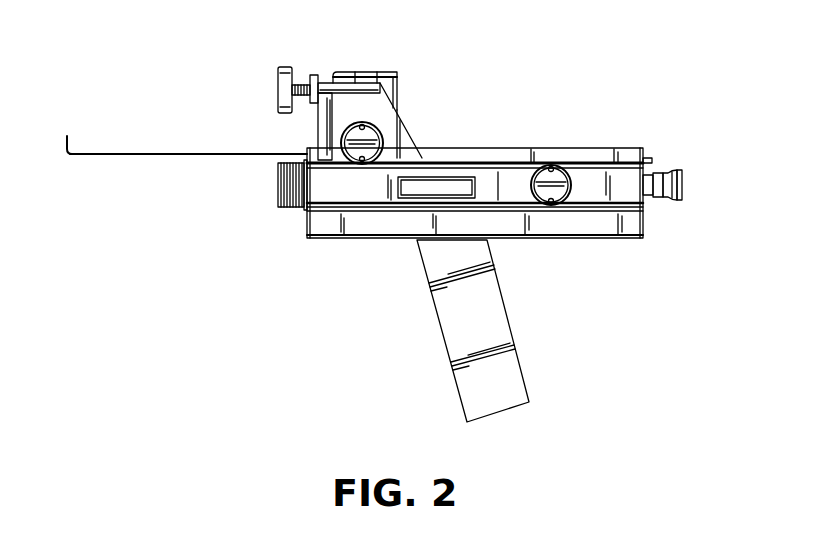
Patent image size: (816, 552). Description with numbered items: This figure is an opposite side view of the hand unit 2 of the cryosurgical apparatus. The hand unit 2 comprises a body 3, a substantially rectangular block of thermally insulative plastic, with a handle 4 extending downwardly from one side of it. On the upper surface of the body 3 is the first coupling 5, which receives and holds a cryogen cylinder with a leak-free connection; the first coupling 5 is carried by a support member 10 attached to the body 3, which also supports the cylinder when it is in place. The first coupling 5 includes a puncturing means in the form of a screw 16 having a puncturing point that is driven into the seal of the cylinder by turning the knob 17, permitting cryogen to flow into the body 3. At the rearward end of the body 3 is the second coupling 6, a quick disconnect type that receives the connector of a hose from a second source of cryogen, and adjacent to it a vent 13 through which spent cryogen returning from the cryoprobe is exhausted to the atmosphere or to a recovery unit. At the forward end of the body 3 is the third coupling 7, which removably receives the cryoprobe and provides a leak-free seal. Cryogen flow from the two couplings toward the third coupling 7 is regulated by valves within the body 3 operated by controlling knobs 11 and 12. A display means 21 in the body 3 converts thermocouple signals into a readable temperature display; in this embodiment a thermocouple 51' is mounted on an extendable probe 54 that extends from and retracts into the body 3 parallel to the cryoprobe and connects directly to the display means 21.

The hand unit 2 is at (383, 273).
The body 3 is at (568, 238).
The handle 4 is at (500, 316).
The first coupling 5 is at (369, 72).
The second coupling 6 is at (675, 199).
The third coupling 7 is at (280, 204).
The support member 10 is at (318, 136).
The controlling knob 11 is at (375, 133).
The controlling knob 12 is at (540, 165).
The vent 13 is at (652, 159).
The screw 16 is at (304, 83).
The knob 17 is at (278, 86).
The display means 21 is at (450, 187).
The thermocouple 51' is at (71, 131).
The extendable probe 54 is at (183, 153).